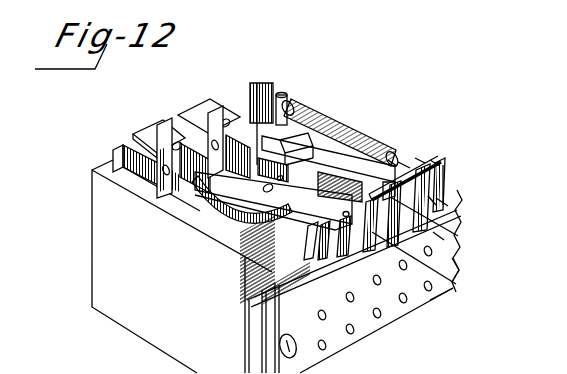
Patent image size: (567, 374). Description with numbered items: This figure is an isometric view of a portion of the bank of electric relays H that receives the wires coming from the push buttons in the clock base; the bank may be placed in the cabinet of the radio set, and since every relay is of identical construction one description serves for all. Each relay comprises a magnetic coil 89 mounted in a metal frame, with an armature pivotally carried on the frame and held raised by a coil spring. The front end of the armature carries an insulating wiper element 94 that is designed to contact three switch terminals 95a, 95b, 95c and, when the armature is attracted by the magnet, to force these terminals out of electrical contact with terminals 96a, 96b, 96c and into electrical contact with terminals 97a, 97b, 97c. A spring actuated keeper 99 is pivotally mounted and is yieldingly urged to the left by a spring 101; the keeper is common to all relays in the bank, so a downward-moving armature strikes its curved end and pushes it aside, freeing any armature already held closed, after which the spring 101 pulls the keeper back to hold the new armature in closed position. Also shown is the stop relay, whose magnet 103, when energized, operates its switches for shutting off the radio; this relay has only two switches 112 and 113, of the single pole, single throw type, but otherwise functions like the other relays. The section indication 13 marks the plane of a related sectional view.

The section line 13- 13 is at (362, 174).
The magnetic coil 89 is at (258, 84).
The spring 101 is at (334, 142).
The switch terminal 95a is at (388, 195).
The spring actuated keeper 99 is at (395, 160).
The switch 112 is at (310, 213).
The switch 113 is at (347, 215).
The magnet 103 is at (222, 224).
The switch terminal 95b is at (405, 163).
The bank of relays H is at (438, 142).
The insulating wiper element 94 is at (421, 160).
The switch terminal 95c is at (435, 163).
The terminal 97c is at (438, 181).
The terminal 96c is at (442, 204).
The terminal 97b is at (434, 202).
The terminal 96b is at (441, 238).
The terminal 97a is at (457, 267).
The terminal 96a is at (451, 288).